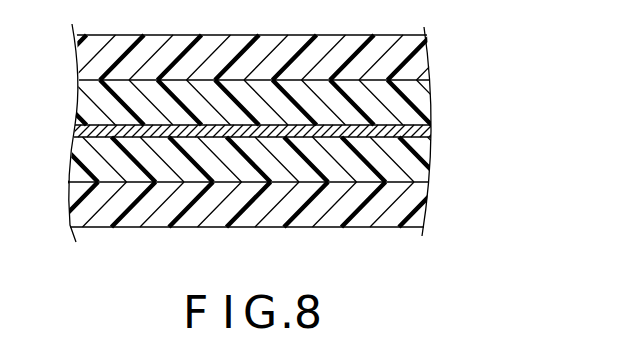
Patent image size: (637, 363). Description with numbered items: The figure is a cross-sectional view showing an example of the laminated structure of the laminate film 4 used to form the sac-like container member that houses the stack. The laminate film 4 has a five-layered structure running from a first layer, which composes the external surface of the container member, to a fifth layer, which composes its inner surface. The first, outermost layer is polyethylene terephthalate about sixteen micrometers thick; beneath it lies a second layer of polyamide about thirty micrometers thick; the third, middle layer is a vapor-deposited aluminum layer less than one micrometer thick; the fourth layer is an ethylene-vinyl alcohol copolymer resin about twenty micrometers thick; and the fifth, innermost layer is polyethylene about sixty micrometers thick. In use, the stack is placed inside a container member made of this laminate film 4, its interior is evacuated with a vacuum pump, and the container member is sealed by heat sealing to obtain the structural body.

The laminate film 4 is at (274, 133).